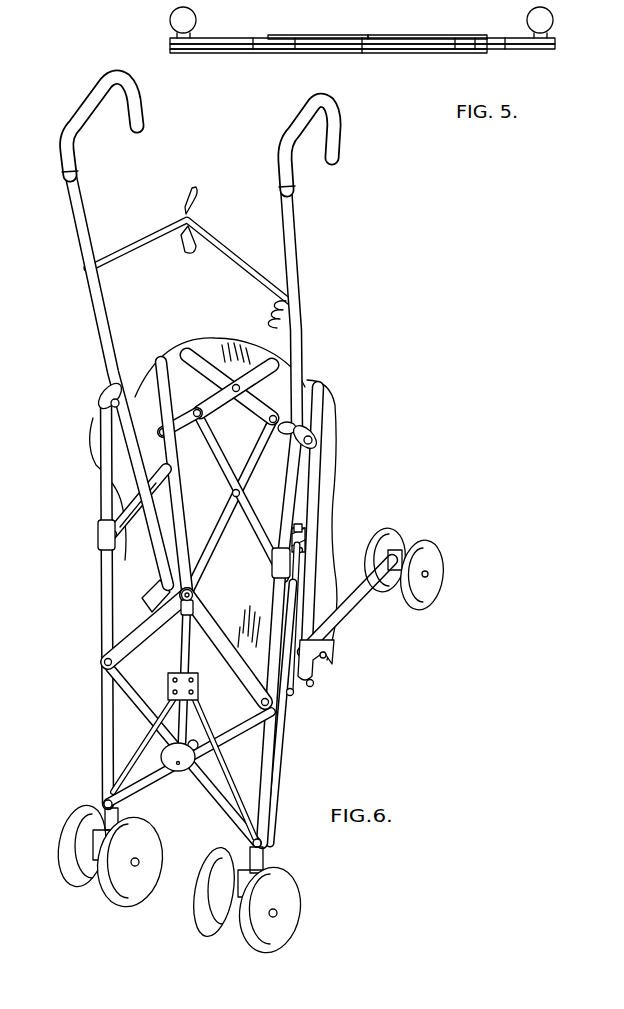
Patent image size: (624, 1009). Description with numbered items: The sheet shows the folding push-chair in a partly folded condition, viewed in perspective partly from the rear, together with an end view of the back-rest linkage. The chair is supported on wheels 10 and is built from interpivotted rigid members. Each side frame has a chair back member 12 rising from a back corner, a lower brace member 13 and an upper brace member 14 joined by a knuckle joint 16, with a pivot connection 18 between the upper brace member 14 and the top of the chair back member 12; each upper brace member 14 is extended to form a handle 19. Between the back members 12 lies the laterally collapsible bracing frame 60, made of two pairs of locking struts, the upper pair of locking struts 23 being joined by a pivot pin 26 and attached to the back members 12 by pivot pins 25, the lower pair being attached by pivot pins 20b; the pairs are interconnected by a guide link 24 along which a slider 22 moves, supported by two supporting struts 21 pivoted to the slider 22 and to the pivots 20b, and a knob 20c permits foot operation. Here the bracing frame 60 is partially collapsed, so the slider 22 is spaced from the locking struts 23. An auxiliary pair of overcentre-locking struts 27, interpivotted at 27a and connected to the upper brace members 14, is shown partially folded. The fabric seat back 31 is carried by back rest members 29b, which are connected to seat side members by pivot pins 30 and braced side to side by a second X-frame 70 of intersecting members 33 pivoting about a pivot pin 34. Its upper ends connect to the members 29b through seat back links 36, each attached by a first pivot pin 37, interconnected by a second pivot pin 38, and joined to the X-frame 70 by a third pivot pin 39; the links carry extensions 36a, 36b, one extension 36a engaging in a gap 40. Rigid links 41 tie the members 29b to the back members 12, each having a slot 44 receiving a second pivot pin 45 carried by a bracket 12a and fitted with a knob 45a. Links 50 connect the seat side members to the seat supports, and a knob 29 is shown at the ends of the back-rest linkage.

In FIG. 6, the wheels 10 is at (420, 605).
In FIG. 6, the chair back member 12 is at (108, 712).
In FIG. 6, the bracket 12a is at (107, 562).
In FIG. 6, the lower brace member 13 is at (360, 600).
In FIG. 6, the upper brace member 14 is at (132, 473).
In FIG. 6, the knuckle joint 16 is at (328, 657).
In FIG. 6, the pivot connection 18 is at (93, 400).
In FIG. 6, the handles 19 is at (70, 125).
In FIG. 6, the pivot pins 20b is at (106, 798).
In FIG. 6, the knob 20c is at (178, 764).
In FIG. 6, the supporting struts 21 is at (148, 737).
In FIG. 6, the slider 22 is at (183, 677).
In FIG. 6, the locking struts 23 is at (137, 648).
In FIG. 6, the guide link 24 is at (168, 767).
In FIG. 6, the pivot pins 25 is at (107, 660).
In FIG. 6, the pivot pin 26 is at (193, 593).
In FIG. 6, the overcentre-locking struts 27 is at (137, 242).
In FIG. 6, the interpivot of struts 27a is at (190, 217).
In FIG. 5, the knob 29 is at (171, 16).
In FIG. 6, the back rest members 29b is at (162, 375).
In FIG. 6, the pivot pins 30 is at (294, 692).
In FIG. 6, the fabric seat back 31 is at (212, 350).
In FIG. 5, the intersecting members 33 is at (305, 52).
In FIG. 6, the intersecting members 33 is at (222, 523).
In FIG. 5, the pivot pin 34 is at (360, 52).
In FIG. 6, the pivot pin 34 is at (232, 493).
In FIG. 5, the seat back links 36 is at (389, 35).
In FIG. 6, the seat back links 36 is at (248, 405).
In FIG. 5, the link extension 36a is at (425, 35).
In FIG. 6, the link extension 36a is at (278, 365).
In FIG. 5, the link extension 36b is at (296, 35).
In FIG. 6, the link extension 36b is at (187, 355).
In FIG. 6, the first pivot pin 37 is at (160, 426).
In FIG. 5, the second pivot pin 38 is at (361, 35).
In FIG. 6, the second pivot pin 38 is at (237, 384).
In FIG. 5, the third pivot pin 39 is at (253, 37).
In FIG. 6, the third pivot pin 39 is at (196, 410).
In FIG. 5, the gap 40 is at (459, 35).
In FIG. 6, the rigid links 41 is at (137, 542).
In FIG. 6, the slot 44 is at (117, 523).
In FIG. 6, the second pivot pin 45 is at (107, 540).
In FIG. 6, the knob 45a is at (302, 550).
In FIG. 6, the links 50 is at (314, 682).
In FIG. 6, the laterally collapsible bracing frame 60 is at (230, 818).
In FIG. 6, the second X-frame 70 is at (255, 520).